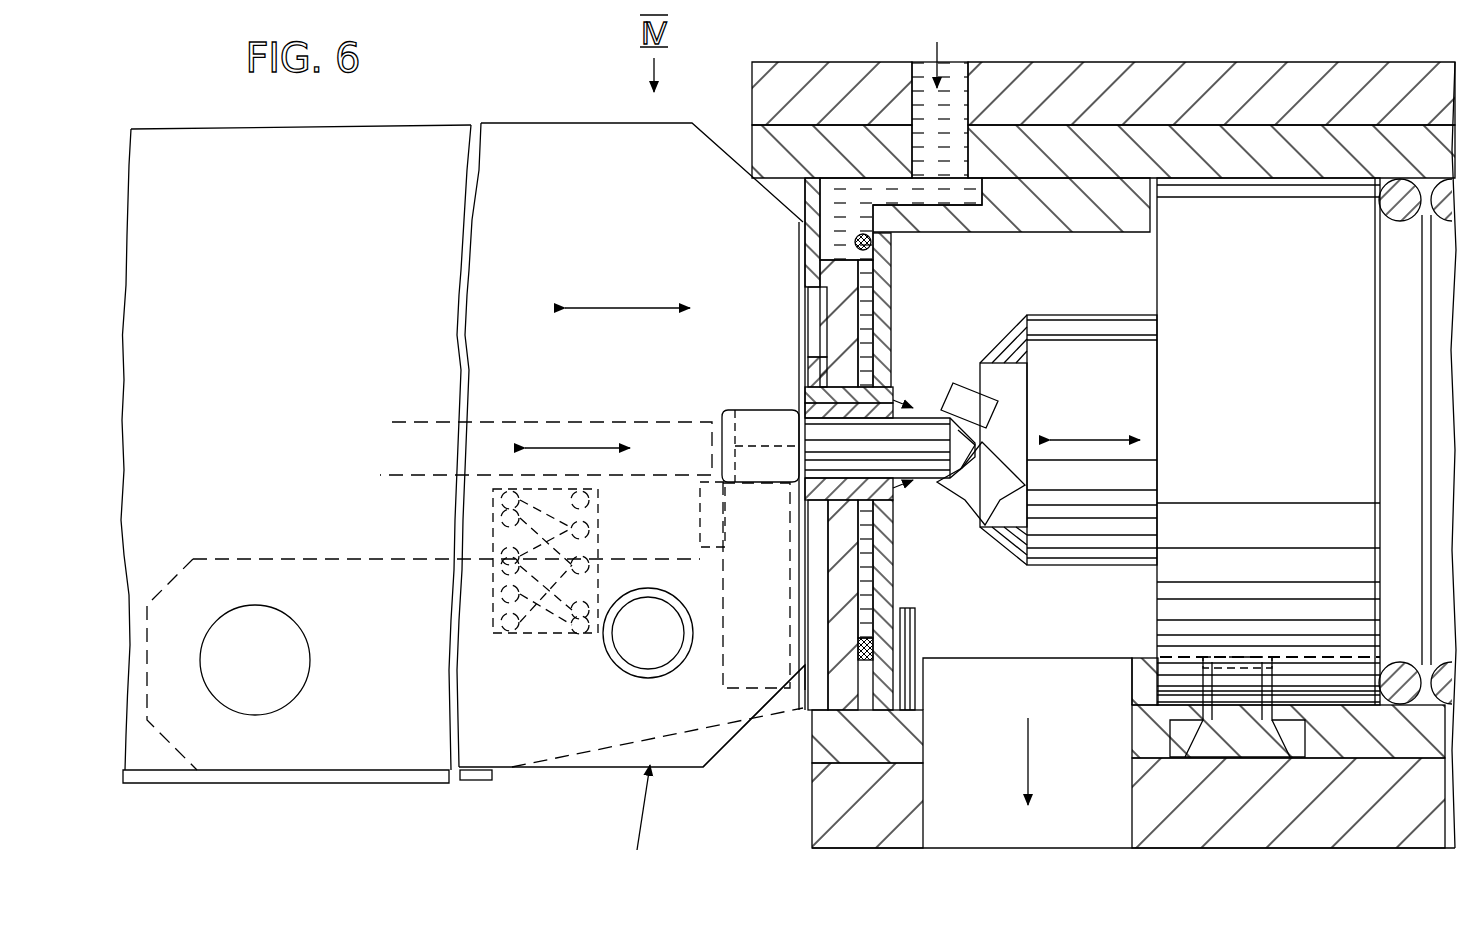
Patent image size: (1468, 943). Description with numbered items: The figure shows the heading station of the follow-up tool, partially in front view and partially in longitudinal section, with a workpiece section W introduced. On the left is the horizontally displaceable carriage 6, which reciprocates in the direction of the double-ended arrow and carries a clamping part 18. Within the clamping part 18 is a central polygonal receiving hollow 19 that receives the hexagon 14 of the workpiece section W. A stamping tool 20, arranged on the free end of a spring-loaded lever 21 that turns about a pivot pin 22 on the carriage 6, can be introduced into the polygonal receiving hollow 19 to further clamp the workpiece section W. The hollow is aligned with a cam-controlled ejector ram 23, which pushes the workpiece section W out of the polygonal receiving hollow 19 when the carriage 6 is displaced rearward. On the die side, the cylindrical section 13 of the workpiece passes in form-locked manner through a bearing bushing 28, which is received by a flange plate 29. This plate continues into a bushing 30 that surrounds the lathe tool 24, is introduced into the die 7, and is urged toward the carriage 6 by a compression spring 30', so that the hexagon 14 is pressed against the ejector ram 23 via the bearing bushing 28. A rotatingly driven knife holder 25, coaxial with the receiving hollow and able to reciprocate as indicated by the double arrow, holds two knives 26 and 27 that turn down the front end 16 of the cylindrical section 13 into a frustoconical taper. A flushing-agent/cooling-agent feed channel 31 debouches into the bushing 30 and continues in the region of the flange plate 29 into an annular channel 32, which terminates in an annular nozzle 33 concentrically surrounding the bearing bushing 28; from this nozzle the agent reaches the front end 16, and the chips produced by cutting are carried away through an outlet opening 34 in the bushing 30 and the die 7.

The carriage 6 is at (432, 122).
The die 7 is at (1232, 80).
The cylindrical section 13 is at (940, 458).
The hexagon 14 is at (763, 472).
The workpiece section W is at (785, 486).
The front end 16 is at (965, 437).
The clamping part 18 is at (571, 140).
The polygonal receiving hollow 19 is at (772, 410).
The stamping tool 20 is at (700, 506).
The lever 21 is at (786, 700).
The pivot pin 22 is at (273, 693).
The ejector ram 23 is at (650, 420).
The tool 24 is at (973, 538).
The knife holder 25 is at (1095, 527).
The knife 26 is at (957, 395).
The knife 27 is at (975, 480).
The bearing bushing 28 is at (826, 383).
The flange plate 29 is at (813, 222).
The bushing 30 is at (1164, 429).
The compression spring 30' is at (1133, 775).
The flushing-agent/cooling-agent feed channel 31 is at (978, 108).
The annular channel 32 is at (864, 287).
The annular nozzle 33 is at (886, 385).
The outlet opening 34 is at (1132, 768).